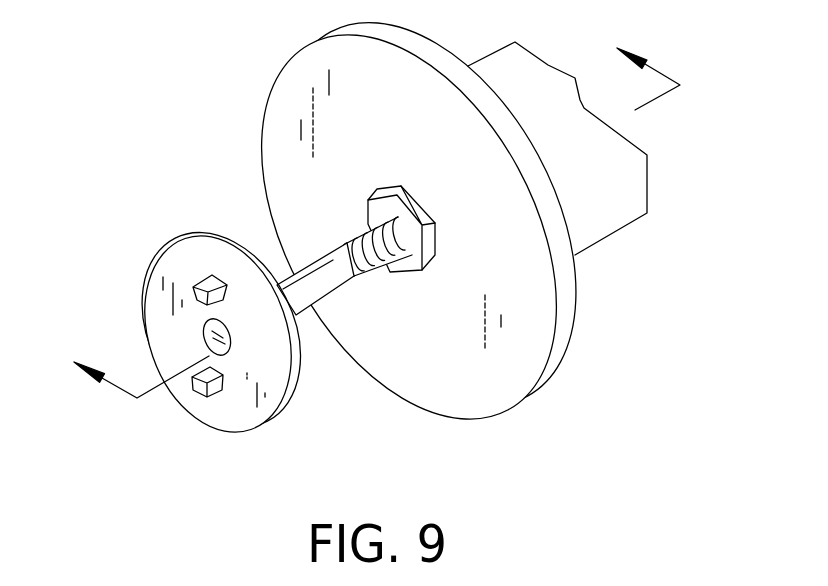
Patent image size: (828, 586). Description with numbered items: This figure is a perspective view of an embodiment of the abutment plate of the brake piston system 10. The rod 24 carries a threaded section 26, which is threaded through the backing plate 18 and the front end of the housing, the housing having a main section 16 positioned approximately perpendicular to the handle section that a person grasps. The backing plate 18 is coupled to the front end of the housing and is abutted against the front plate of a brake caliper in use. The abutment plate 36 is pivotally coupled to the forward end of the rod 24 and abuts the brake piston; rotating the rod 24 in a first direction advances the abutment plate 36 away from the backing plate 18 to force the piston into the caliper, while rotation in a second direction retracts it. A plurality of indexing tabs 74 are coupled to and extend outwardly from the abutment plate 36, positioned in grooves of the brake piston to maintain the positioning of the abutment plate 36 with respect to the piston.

The brake piston system 10 is at (381, 225).
The main section 16 is at (608, 233).
The backing plate 18 is at (432, 367).
The rod 24 is at (285, 276).
The threaded section 26 is at (360, 273).
The abutment plate 36 is at (143, 307).
The indexing tabs 74 is at (218, 300).